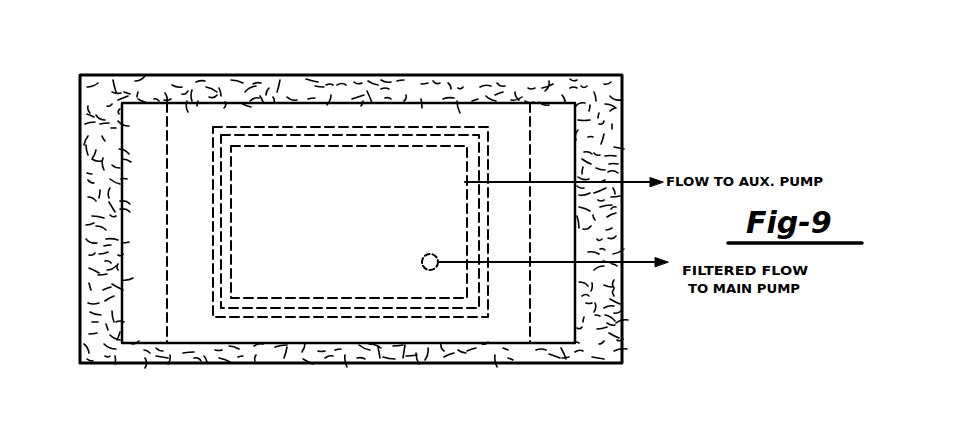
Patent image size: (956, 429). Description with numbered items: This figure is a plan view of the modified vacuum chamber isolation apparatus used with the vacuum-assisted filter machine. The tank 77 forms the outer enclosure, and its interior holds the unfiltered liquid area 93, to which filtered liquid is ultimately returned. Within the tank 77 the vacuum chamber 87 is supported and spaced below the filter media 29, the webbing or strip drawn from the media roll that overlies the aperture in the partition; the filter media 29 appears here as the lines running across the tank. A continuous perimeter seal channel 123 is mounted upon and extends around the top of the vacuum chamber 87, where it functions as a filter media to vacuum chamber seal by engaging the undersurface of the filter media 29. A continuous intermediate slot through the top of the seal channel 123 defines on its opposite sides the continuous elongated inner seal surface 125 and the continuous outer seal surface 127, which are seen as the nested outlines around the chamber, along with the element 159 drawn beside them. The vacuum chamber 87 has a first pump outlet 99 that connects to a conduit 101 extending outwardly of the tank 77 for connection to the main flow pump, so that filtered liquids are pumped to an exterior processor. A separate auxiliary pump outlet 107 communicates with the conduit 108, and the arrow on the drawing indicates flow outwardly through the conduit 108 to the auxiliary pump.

The filter media 29 is at (163, 118).
The tank 77 is at (80, 163).
The unfiltered liquid area 93 is at (100, 242).
The outer filter layer 159 is at (213, 201).
The inner seal surface 125 is at (222, 220).
The outer seal surface 127 is at (325, 221).
The perimeter seal channel 123 is at (349, 222).
The vacuum chamber 87 is at (322, 225).
The auxiliary pump outlet 107 is at (541, 161).
The conduit 108 is at (603, 182).
The pump outlet 99 is at (539, 244).
The conduit 101 is at (610, 262).